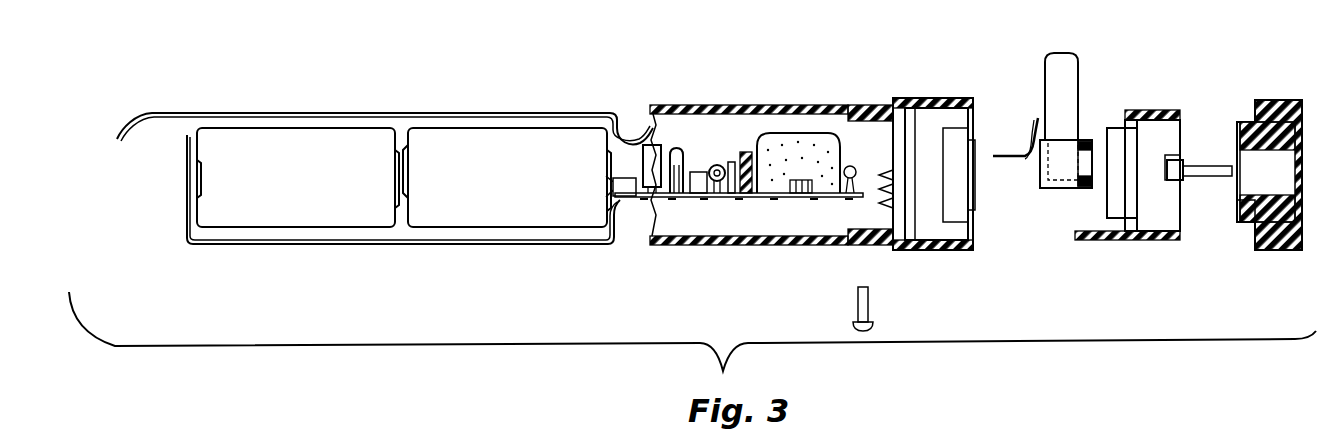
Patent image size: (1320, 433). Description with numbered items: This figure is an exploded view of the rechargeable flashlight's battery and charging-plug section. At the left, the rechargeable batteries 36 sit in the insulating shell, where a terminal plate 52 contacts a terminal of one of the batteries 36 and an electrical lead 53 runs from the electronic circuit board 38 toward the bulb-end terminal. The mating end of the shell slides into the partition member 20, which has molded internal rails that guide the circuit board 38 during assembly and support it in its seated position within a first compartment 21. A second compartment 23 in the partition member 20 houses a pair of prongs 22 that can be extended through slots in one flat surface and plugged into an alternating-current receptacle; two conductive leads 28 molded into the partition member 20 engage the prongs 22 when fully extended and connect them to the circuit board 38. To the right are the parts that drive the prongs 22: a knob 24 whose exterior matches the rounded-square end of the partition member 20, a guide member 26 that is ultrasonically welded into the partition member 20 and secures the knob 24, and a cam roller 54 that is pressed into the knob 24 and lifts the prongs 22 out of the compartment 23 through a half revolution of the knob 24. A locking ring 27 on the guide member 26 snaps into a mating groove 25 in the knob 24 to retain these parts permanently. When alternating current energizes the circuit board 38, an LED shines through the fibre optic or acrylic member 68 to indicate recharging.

The partition member 20 is at (775, 105).
The first compartment 21 is at (683, 130).
The prongs 22 is at (1065, 58).
The second compartment 23 is at (923, 130).
The knob 24 is at (1258, 100).
The mating groove 25 is at (1250, 228).
The guide member 26 is at (1143, 113).
The locking ring 27 is at (1170, 240).
The conductive leads 28 is at (1010, 150).
The rechargeable batteries 36 is at (310, 193).
The electronic circuit board 38 is at (730, 200).
The terminal plate 52 is at (187, 200).
The electrical lead 53 is at (278, 112).
The cam roller 54 is at (1182, 160).
The fibre optic or acrylic member 68 is at (870, 312).